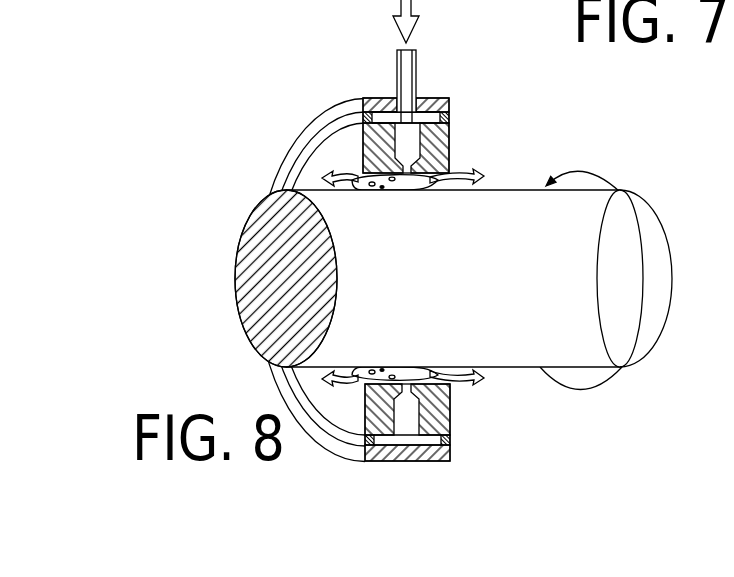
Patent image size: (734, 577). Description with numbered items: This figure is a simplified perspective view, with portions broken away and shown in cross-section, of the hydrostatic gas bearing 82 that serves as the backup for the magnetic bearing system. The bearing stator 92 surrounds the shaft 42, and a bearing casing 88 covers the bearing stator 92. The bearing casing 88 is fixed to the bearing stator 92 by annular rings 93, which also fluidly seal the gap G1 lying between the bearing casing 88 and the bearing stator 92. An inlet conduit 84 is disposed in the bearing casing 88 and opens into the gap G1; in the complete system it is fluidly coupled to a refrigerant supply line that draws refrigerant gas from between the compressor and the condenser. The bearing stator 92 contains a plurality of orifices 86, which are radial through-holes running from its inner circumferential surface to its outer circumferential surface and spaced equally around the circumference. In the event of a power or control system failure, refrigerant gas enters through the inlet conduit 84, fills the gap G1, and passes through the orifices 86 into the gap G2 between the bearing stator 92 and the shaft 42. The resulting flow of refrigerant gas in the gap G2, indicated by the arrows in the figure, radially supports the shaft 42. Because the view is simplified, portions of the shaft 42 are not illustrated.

The shaft 42 is at (665, 238).
The hydrostatic gas bearing 82 is at (263, 120).
The inlet conduit 84 is at (418, 78).
The orifices 86 is at (410, 140).
The bearing casing 88 is at (410, 461).
The bearing stator 92 is at (333, 160).
The annular rings 93 is at (378, 117).
The gap between bearing casing and bearing stator G1 is at (388, 117).
The gap between bearing stator and shaft G2 is at (430, 372).